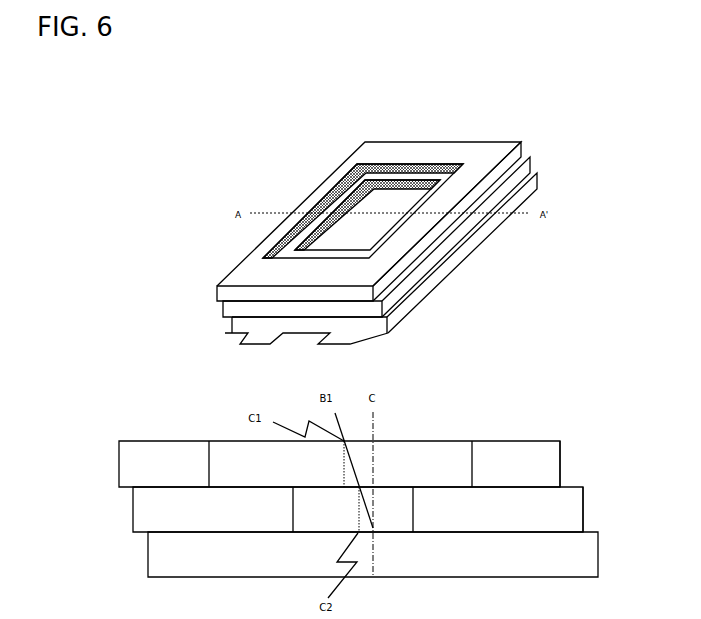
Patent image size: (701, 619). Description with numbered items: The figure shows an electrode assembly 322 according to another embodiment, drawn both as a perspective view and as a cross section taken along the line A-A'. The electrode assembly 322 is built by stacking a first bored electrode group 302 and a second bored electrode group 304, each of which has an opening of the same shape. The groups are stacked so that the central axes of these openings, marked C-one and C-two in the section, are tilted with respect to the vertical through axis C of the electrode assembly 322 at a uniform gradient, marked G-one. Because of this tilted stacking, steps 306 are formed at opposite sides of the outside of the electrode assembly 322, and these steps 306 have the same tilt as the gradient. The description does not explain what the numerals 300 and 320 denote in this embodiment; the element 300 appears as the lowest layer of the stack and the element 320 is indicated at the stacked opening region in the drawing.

The first substrate layer 300 is at (147, 555).
The first bored electrode group 302 is at (133, 510).
The second bored electrode group 304 is at (118, 448).
The steps 306 is at (590, 530).
The opening / cavity 320 is at (362, 219).
The electrode assembly 322 is at (512, 142).